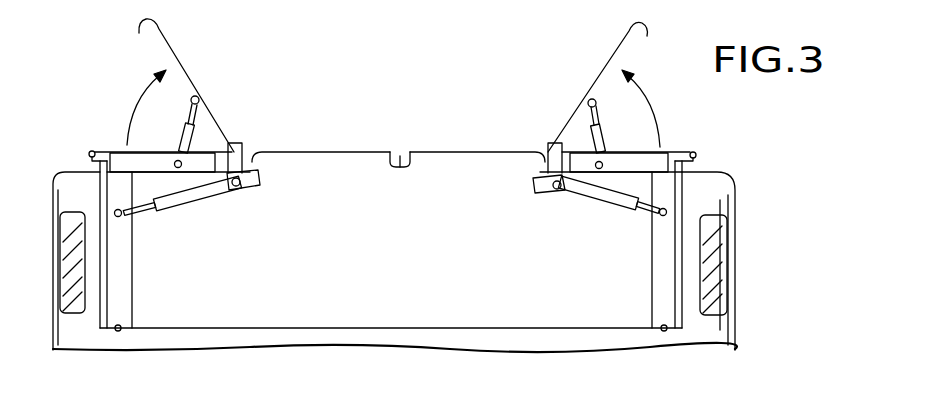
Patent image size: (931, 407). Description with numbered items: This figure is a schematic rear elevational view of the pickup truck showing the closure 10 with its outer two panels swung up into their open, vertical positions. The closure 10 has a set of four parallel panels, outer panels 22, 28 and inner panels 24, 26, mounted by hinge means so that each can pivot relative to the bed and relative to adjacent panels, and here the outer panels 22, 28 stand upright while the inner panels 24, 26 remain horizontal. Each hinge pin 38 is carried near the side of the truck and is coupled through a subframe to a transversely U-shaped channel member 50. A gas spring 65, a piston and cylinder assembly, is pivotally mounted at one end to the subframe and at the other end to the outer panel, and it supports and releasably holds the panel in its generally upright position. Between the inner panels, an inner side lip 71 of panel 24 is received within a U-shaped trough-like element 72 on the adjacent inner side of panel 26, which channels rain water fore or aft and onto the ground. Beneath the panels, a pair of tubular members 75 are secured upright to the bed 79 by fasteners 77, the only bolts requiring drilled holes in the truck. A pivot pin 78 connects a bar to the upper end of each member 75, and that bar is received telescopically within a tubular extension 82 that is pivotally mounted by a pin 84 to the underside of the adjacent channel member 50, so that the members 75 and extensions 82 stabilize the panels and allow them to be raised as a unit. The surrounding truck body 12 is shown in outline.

The closure 10 is at (441, 121).
The truck bed body 12 is at (755, 205).
The outer panel 22 is at (187, 71).
The inner panel 24 is at (329, 151).
The inner panel 26 is at (470, 151).
The outer panel 28 is at (592, 82).
The hinge pin 38 is at (93, 151).
The U-shaped channel member 50 is at (247, 158).
The gas spring 65 is at (184, 130).
The inner side lip 71 is at (405, 152).
The U-shaped trough-like element 72 is at (405, 168).
The tubular member 75 is at (133, 300).
The fastener 77 is at (119, 331).
The pivot pin 78 is at (120, 216).
The bed 79 is at (384, 317).
The tubular extension 82 is at (200, 198).
The pin 84 is at (247, 192).